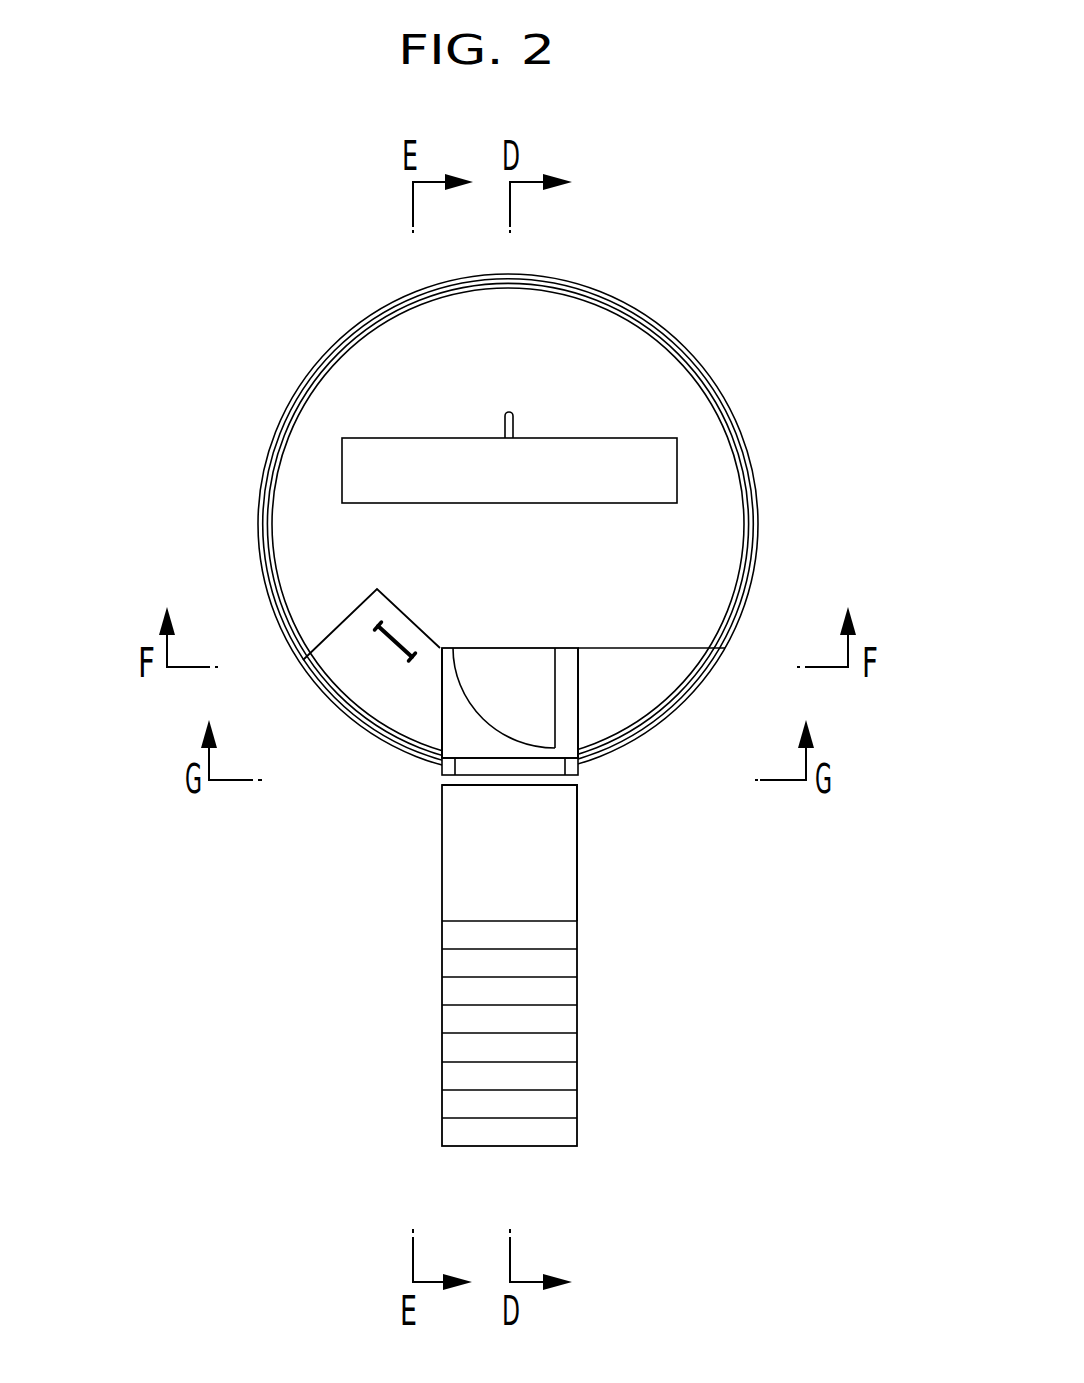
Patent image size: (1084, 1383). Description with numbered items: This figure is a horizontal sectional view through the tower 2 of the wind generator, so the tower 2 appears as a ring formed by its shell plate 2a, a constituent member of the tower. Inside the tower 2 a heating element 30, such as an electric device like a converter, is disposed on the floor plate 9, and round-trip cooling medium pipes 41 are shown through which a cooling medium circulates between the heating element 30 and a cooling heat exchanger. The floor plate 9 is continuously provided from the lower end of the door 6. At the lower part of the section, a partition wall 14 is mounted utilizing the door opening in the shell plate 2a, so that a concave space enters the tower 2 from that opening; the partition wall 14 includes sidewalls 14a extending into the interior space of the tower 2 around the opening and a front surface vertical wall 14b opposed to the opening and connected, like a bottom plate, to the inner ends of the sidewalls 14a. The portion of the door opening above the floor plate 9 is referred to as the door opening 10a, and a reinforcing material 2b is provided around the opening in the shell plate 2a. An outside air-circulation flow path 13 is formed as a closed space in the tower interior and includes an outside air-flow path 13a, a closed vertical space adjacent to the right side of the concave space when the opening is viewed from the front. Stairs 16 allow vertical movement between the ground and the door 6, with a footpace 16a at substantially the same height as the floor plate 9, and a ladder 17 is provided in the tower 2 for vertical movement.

The tower 2 is at (717, 344).
The shell plate 2a is at (627, 302).
The reinforcing material 2b is at (443, 770).
The door 6 is at (555, 677).
The floor plate 9 is at (707, 488).
The door opening 10a is at (525, 767).
The outside air-circulation flow path 13 is at (663, 730).
The outside air-flow path 13a is at (663, 675).
The partition wall 14 is at (597, 643).
The sidewalls 14a is at (440, 722).
The front surface vertical wall 14b is at (555, 648).
The stairs 16 is at (577, 1019).
The footpace 16a is at (560, 888).
The ladder 17 is at (393, 637).
The heating element 30 is at (467, 455).
The round-trip cooling medium pipes 41 is at (512, 408).